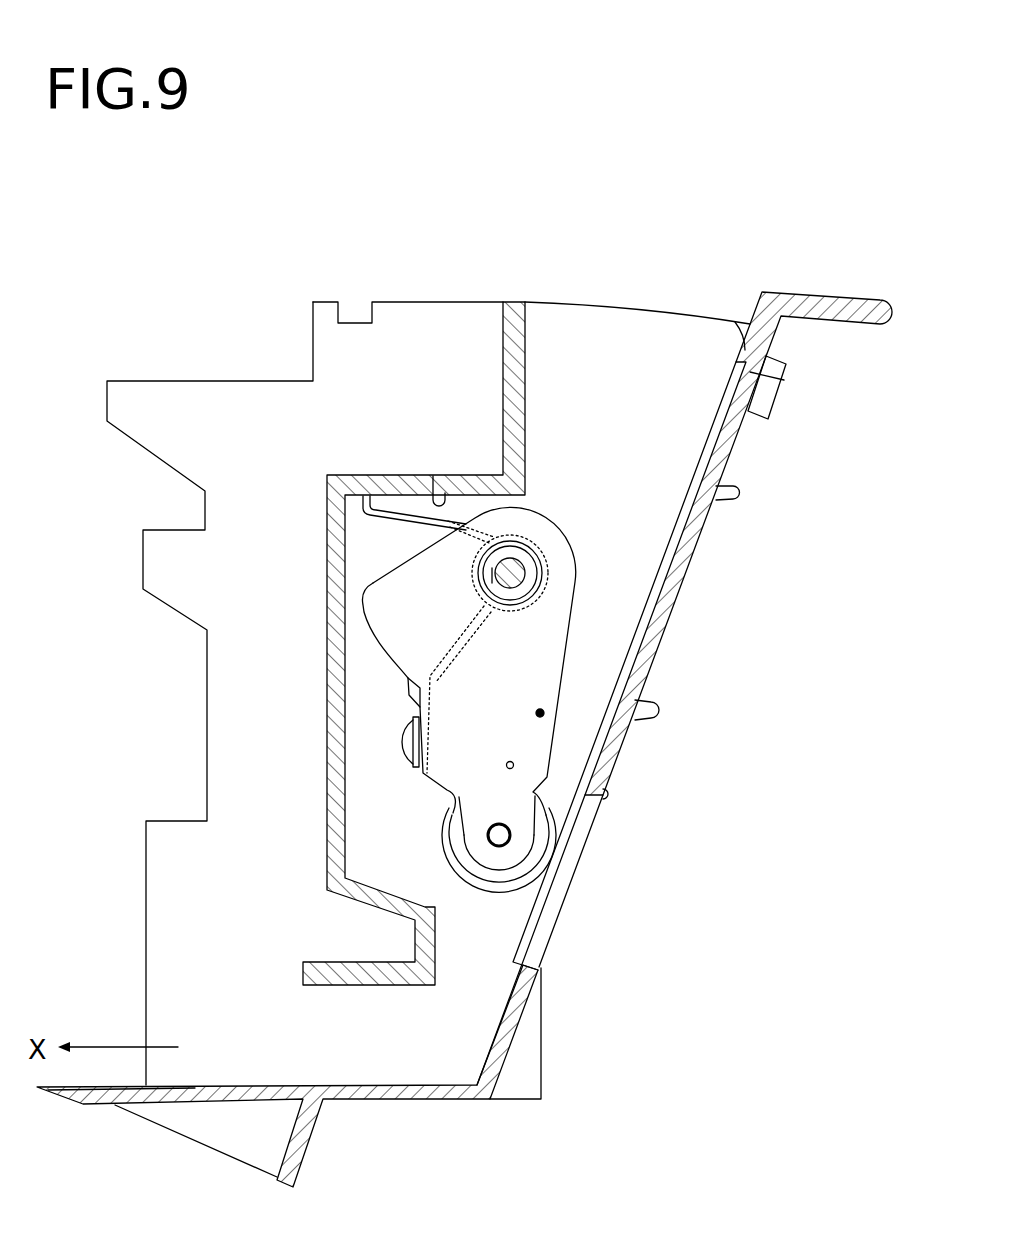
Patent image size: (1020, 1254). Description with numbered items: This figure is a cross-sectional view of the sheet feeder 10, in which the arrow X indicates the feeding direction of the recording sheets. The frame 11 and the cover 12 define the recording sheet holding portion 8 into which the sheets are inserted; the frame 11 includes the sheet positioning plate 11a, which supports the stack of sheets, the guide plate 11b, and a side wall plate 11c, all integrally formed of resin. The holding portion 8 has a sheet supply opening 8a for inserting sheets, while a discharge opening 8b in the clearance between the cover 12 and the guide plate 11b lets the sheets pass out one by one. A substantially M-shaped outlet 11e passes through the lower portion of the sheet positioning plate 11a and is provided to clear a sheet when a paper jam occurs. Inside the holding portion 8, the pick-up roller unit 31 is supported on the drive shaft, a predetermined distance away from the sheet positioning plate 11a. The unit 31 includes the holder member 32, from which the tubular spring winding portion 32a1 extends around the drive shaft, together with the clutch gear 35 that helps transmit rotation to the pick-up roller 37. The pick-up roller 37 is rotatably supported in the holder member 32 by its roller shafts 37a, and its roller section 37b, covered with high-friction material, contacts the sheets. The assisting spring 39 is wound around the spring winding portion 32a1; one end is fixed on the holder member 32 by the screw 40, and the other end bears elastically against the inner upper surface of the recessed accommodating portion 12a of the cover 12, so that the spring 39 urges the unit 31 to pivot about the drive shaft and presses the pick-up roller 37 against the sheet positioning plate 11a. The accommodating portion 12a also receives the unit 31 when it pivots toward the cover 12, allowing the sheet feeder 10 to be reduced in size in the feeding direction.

The sheet feeder 10 is at (609, 80).
The recording sheet holding portion 8 is at (399, 643).
The sheet supply opening 8a is at (747, 347).
The discharge opening 8b is at (280, 1021).
The frame 11 is at (474, 720).
The sheet positioning plate 11a is at (661, 631).
The guide plate 11b is at (366, 1097).
The side wall plate 11c is at (432, 312).
The outlet 11e is at (601, 801).
The cover 12 is at (414, 643).
The accommodating portion 12a is at (433, 476).
The pick-up roller unit 31 is at (507, 718).
The holder member 32 is at (553, 660).
The spring winding portion 32a1 is at (475, 582).
The clutch gear 35 is at (412, 693).
The pick-up roller 37 is at (459, 862).
The roller shaft 37a is at (497, 824).
The roller section 37b is at (488, 889).
The assisting spring 39 is at (398, 520).
The screw 40 is at (404, 742).